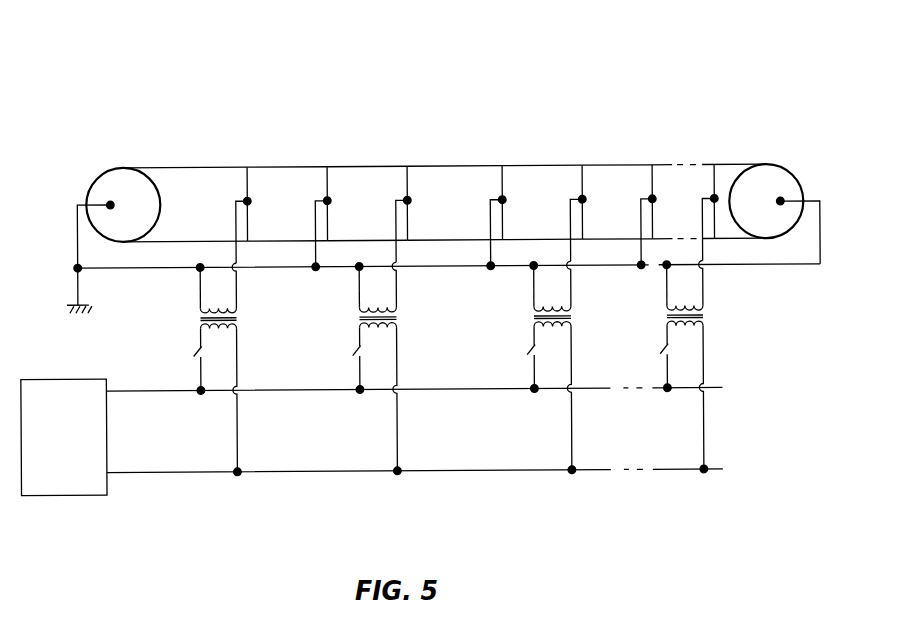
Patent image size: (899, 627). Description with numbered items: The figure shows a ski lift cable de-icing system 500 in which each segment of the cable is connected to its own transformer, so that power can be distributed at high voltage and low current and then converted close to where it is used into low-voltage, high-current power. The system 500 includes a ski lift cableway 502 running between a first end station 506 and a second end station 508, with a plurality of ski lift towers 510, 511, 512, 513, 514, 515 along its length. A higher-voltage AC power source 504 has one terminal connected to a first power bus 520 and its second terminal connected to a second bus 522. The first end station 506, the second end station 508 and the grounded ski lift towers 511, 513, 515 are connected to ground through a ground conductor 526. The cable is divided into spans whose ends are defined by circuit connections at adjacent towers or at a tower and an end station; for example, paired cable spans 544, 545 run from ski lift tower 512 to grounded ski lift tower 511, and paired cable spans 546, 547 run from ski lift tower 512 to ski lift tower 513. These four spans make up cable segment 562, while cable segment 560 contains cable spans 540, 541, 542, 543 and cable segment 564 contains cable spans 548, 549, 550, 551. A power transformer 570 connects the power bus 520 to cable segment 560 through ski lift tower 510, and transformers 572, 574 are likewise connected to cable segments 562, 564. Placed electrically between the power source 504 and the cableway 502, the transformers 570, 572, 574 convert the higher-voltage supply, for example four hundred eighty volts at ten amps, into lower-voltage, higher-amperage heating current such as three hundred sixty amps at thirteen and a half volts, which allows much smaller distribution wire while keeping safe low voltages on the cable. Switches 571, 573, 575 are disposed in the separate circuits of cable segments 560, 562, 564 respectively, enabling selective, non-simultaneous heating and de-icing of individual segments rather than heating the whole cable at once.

The system 500 is at (333, 93).
The ski lift cableway 502 is at (210, 165).
The higher-voltage AC power source 504 is at (62, 493).
The first end station 506 is at (108, 176).
The second end station 508 is at (776, 177).
The ski lift tower 510 is at (250, 198).
The grounded ski lift tower 511 is at (332, 198).
The ski lift tower 512 is at (412, 198).
The grounded ski lift tower 513 is at (507, 198).
The ski lift tower 514 is at (587, 198).
The grounded ski lift tower 515 is at (657, 198).
The first power bus 520 is at (164, 471).
The second bus 522 is at (163, 390).
The ground conductor 526 is at (140, 267).
The cable span 540 is at (160, 165).
The cable span 541 is at (184, 239).
The cable span 542 is at (305, 165).
The cable span 543 is at (266, 239).
The cable span 544 is at (376, 165).
The cable span 545 is at (347, 239).
The cable span 546 is at (463, 165).
The cable span 547 is at (433, 239).
The cable span 548 is at (552, 165).
The cable span 549 is at (515, 239).
The cable span 550 is at (625, 165).
The cable span 551 is at (592, 239).
The cable segment 560 is at (262, 118).
The cable segment 562 is at (410, 128).
The cable segment 564 is at (579, 119).
The power transformer 570 is at (237, 318).
The switch 571 is at (198, 352).
The transformer 572 is at (397, 318).
The switch 573 is at (359, 354).
The transformer 574 is at (571, 318).
The switch 575 is at (533, 350).